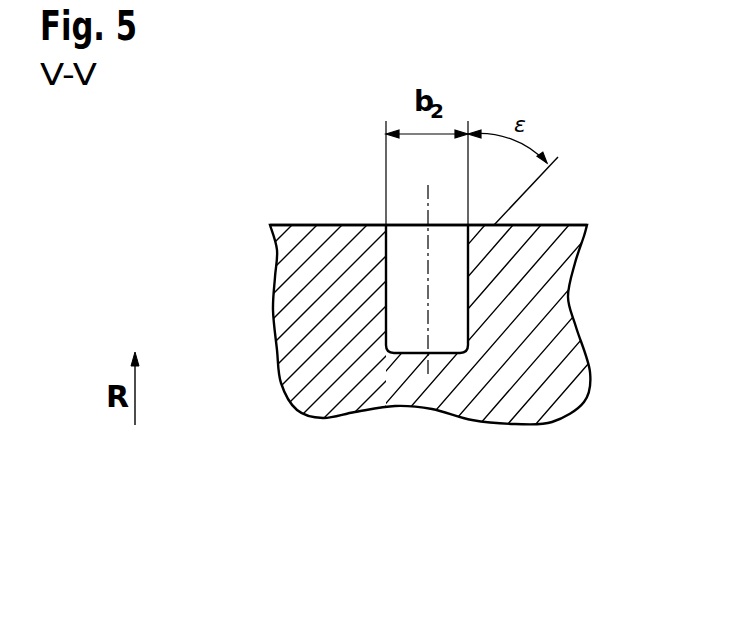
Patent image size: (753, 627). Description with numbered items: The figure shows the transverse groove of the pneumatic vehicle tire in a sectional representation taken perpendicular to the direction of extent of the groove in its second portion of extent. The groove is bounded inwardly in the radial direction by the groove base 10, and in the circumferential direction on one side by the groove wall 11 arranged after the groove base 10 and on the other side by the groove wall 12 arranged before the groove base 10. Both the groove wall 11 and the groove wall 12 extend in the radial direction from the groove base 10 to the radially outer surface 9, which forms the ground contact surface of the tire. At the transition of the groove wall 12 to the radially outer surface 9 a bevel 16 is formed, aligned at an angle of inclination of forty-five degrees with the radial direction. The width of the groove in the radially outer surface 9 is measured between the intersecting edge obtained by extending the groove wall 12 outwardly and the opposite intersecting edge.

The radially outer surface 9 is at (302, 225).
The groove base 10 is at (416, 348).
The groove wall 11 is at (386, 282).
The groove wall 12 is at (468, 310).
The bevel 16 is at (468, 227).